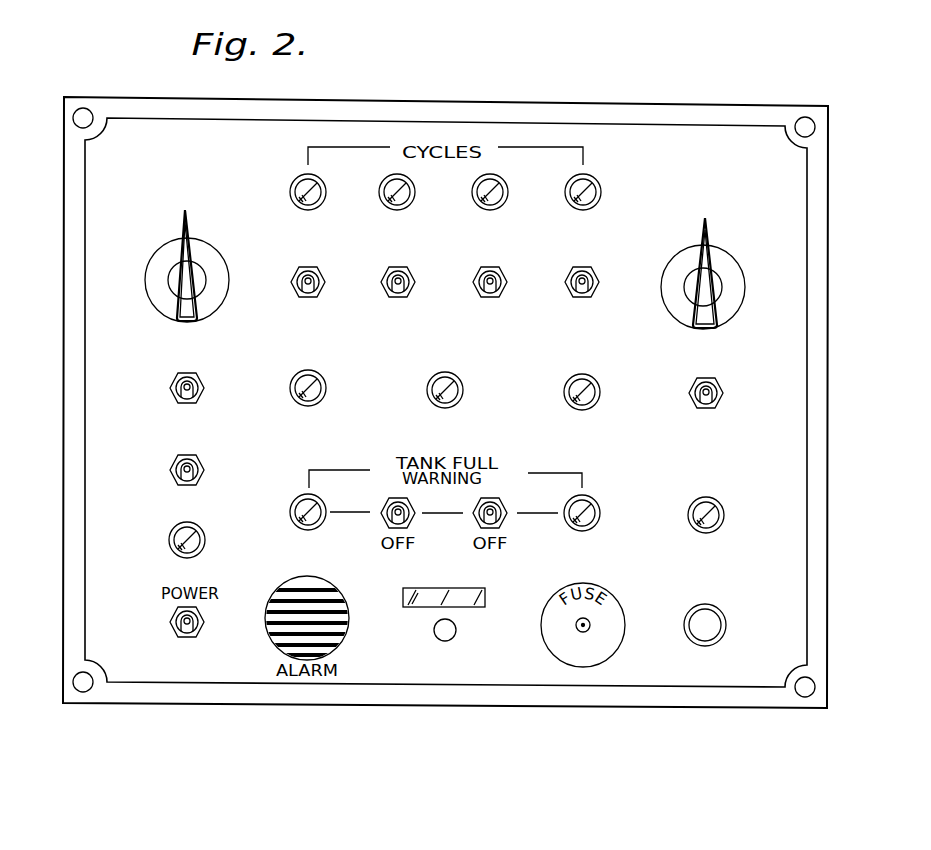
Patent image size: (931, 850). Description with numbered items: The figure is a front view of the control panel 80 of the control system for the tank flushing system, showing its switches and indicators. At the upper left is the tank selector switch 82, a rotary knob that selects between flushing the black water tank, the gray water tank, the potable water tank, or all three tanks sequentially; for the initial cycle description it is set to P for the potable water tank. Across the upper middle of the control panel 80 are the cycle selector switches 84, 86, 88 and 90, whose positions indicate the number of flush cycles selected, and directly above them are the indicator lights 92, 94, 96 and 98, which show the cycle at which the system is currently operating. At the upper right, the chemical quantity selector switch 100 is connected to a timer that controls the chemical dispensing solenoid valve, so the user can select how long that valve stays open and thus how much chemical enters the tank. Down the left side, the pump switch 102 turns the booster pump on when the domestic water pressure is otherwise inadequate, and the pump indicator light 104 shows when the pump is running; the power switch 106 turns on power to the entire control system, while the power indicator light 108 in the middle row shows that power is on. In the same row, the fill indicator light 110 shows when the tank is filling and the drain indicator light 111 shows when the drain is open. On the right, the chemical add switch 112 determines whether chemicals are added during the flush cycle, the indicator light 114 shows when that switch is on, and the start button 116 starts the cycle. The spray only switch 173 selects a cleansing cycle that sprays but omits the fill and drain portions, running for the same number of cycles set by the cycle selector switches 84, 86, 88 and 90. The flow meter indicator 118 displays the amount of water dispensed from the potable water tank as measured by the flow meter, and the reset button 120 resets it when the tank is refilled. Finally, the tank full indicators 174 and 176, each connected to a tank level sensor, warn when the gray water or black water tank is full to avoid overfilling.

The control panel 80 is at (515, 105).
The tank selector switch 82 is at (148, 277).
The cycle selector switch 84 is at (295, 294).
The cycle selector switch 86 is at (388, 294).
The cycle selector switch 88 is at (480, 294).
The cycle selector switch 90 is at (572, 294).
The indicator light 92 is at (320, 200).
The indicator light 94 is at (408, 200).
The indicator light 96 is at (500, 200).
The indicator light 98 is at (593, 201).
The chemical quantity selector switch 100 is at (735, 282).
The pump switch 102 is at (172, 474).
The pump indicator light 104 is at (177, 548).
The power switch 106 is at (172, 625).
The power indicator light 108 is at (460, 388).
The fill indicator light 110 is at (320, 378).
The drain indicator light 111 is at (597, 383).
The chemical add switch 112 is at (722, 385).
The chemical indicator light 114 is at (722, 510).
The start button 116 is at (727, 623).
The flow meter indicator 118 is at (485, 595).
The reset button 120 is at (442, 641).
The spray only switch 173 is at (172, 390).
The tank full indicator 174 is at (593, 505).
The tank full indicator 176 is at (320, 503).